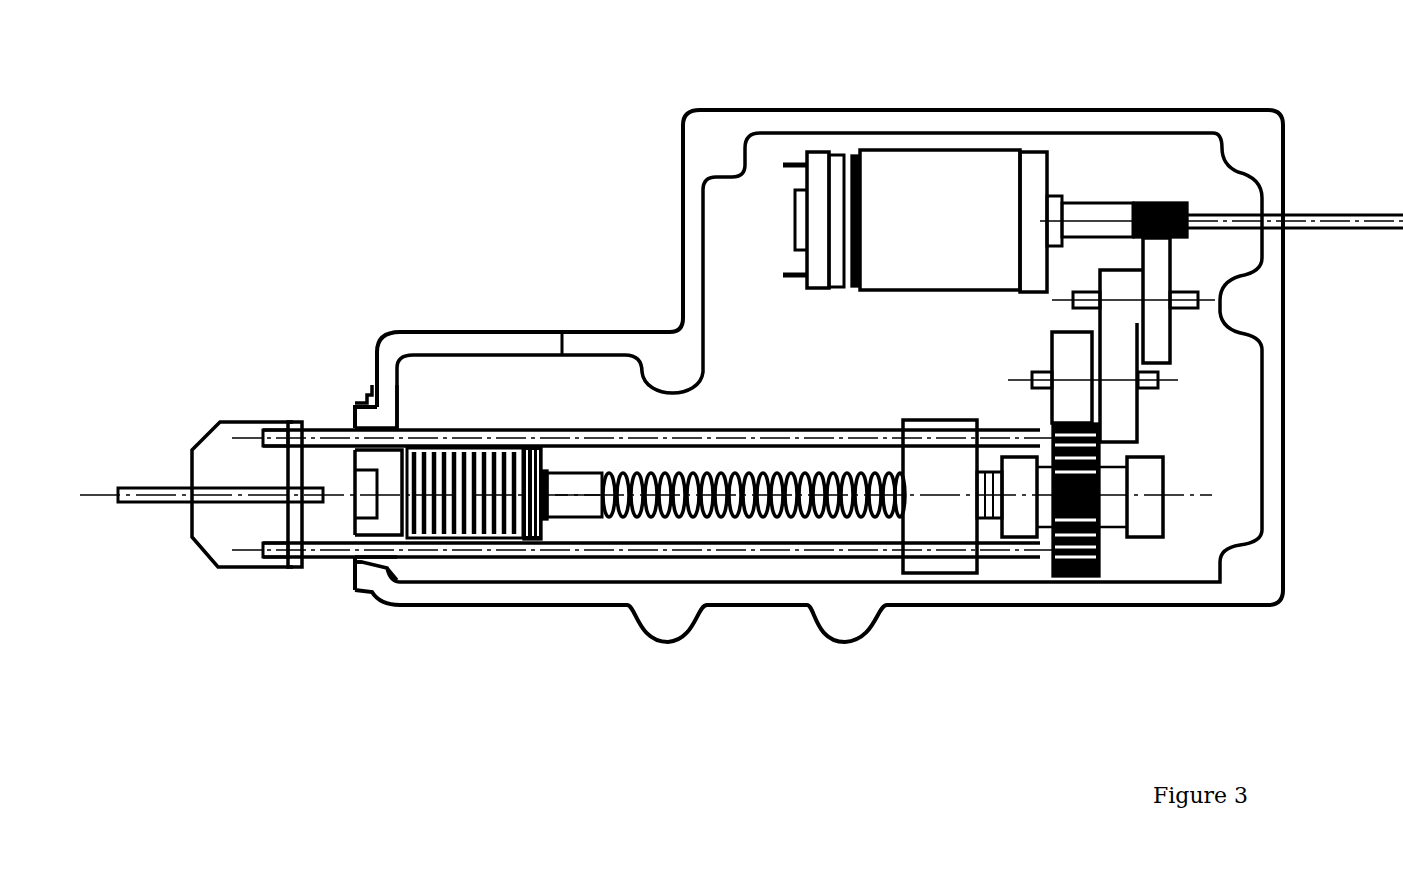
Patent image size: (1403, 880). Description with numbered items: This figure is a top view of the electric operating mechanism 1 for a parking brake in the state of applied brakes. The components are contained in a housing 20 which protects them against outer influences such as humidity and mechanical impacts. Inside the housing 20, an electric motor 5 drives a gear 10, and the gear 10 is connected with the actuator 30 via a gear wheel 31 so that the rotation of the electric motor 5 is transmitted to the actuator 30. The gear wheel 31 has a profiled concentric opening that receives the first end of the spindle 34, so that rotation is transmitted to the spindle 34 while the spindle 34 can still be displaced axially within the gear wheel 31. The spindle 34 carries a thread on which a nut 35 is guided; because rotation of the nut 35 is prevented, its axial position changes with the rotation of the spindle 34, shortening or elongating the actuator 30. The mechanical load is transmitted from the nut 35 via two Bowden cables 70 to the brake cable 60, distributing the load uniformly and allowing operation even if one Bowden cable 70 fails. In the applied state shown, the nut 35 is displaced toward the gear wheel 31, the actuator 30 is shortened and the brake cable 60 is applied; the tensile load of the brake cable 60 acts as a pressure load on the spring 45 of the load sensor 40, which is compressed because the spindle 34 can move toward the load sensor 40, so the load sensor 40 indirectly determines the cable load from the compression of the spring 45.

The operating mechanism 1 is at (412, 125).
The housing 20 is at (730, 147).
The electric motor 5 is at (959, 221).
The gear 10 is at (1112, 325).
The gear wheel 31 is at (1097, 578).
The nut 35 is at (943, 533).
The spindle 34 is at (830, 473).
The spring 45 is at (475, 455).
The load sensor 40 is at (470, 563).
The actuator 30 is at (790, 540).
The Bowden cables 70 is at (347, 443).
The brake cable 60 is at (152, 502).